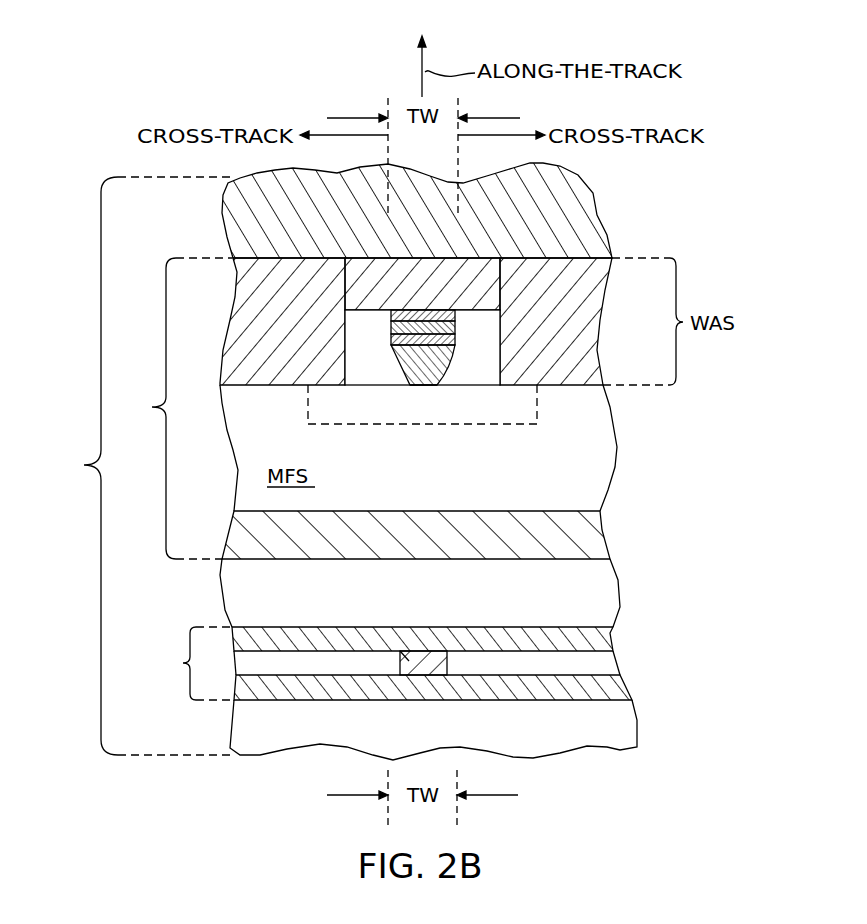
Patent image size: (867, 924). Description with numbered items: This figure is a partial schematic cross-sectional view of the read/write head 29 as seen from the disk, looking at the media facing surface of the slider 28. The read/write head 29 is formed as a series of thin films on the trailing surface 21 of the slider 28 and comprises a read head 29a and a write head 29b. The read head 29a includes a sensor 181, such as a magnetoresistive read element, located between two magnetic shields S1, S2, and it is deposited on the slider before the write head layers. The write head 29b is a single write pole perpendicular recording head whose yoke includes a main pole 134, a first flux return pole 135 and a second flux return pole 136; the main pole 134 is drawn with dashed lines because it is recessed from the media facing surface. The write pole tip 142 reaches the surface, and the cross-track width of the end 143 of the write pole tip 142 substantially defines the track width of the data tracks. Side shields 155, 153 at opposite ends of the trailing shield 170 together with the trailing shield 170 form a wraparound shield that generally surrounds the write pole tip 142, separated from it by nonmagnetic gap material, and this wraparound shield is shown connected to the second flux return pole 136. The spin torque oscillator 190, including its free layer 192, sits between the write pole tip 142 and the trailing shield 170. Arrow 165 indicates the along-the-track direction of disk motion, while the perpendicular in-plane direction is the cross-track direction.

The arrow 165 is at (425, 58).
The second flux return pole 136 is at (567, 205).
The trailing shield 170 is at (421, 302).
The side shield 155 is at (244, 286).
The side shield 153 is at (590, 322).
The spin torque oscillator 190 is at (419, 327).
The free layer 192 is at (452, 326).
The write pole tip 142 is at (440, 357).
The end of the write pole tip 143 is at (428, 380).
The main pole 134 is at (505, 424).
The first flux return pole 135 is at (577, 530).
The slider 28 is at (620, 570).
The sensor 181 is at (450, 663).
The magnetic shield S2 is at (600, 640).
The magnetic shield S1 is at (613, 690).
The trailing surface 21 is at (588, 702).
The read/write head 29 is at (143, 466).
The read head 29a is at (187, 663).
The write head 29b is at (172, 408).